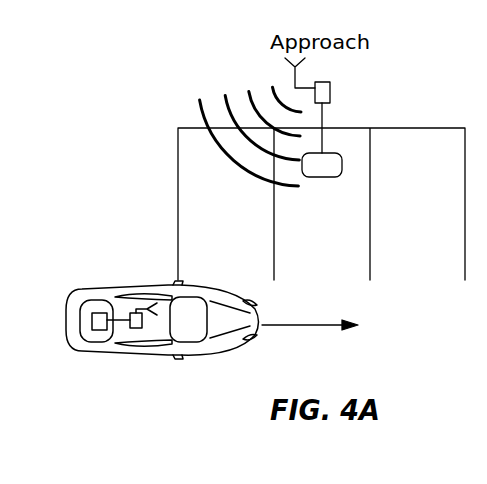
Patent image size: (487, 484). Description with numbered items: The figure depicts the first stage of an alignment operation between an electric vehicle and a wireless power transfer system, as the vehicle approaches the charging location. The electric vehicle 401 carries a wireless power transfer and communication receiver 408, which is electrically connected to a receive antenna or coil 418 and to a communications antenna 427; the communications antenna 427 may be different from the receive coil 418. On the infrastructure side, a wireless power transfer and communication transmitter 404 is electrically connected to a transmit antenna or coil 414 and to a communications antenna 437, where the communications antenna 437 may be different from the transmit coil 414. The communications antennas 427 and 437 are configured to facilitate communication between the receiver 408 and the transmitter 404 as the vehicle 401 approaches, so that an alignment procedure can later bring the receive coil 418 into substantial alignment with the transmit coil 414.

The electric vehicle 401 is at (192, 358).
The wireless power transfer and communication transmitter 404 is at (330, 90).
The wireless power transfer and communication receiver 408 is at (135, 330).
The transmit antenna or coil 414 is at (342, 165).
The receive antenna or coil 418 is at (100, 316).
The communications antenna 427 is at (153, 308).
The communications antenna 437 is at (283, 65).